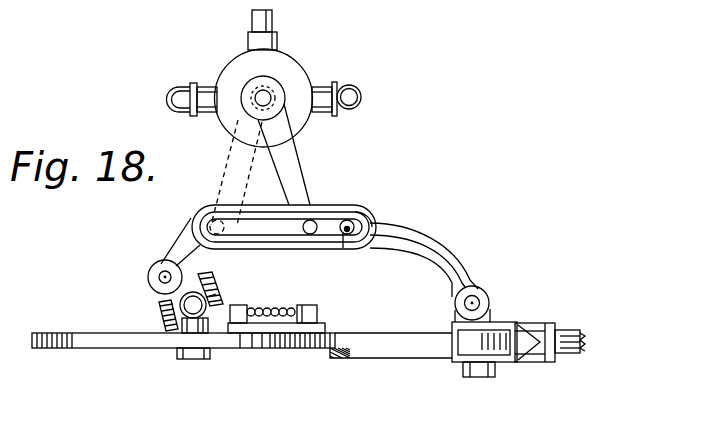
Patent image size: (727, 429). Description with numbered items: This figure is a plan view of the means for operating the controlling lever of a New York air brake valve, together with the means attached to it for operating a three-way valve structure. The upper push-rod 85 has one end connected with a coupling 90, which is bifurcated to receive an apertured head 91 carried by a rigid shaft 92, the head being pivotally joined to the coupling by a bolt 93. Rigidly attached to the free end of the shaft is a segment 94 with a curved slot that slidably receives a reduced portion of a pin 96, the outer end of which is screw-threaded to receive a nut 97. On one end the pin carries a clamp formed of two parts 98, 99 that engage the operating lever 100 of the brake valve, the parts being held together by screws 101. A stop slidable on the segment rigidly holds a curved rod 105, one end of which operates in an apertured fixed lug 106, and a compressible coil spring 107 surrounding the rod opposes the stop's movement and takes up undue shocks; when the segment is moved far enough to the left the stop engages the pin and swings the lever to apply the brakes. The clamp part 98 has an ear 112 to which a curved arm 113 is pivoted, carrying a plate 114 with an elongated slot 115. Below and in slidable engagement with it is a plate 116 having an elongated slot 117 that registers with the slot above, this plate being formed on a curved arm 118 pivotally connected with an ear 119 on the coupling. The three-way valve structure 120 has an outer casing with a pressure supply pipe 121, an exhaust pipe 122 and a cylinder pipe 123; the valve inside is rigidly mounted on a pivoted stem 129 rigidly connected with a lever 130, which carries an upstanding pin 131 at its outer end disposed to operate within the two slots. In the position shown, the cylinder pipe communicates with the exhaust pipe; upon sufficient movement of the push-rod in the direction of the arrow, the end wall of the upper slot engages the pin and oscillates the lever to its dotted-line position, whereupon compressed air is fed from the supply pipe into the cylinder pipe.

The upper push-rod 85 is at (572, 333).
The coupling 90 is at (538, 323).
The apertured head 91 is at (484, 340).
The rigid shaft 92 is at (398, 347).
The bolt 93 is at (480, 378).
The segment 94 is at (137, 343).
The pin 96 is at (181, 328).
The nut 97 is at (195, 356).
The clamp part 98 is at (208, 283).
The clamp part 99 is at (217, 296).
The operating lever 100 is at (192, 305).
The screws 101 is at (158, 302).
The curved rod 105 is at (278, 322).
The fixed lug 106 is at (318, 315).
The compressible coil spring 107 is at (268, 308).
The ear 112 is at (153, 268).
The curved arm 113 is at (178, 245).
The plate 114 is at (351, 221).
The elongated slot 115 is at (358, 213).
The plate 116 is at (283, 250).
The elongated slot 117 is at (343, 236).
The curved arm 118 is at (443, 245).
The ear 119 is at (498, 318).
The three-way valve structure 120 is at (291, 76).
The pressure supply pipe 121 is at (168, 100).
The exhaust pipe 122 is at (350, 97).
The cylinder pipe 123 is at (249, 41).
The pivoted stem 129 is at (262, 100).
The lever 130 is at (292, 168).
The upstanding pin 131 is at (312, 221).